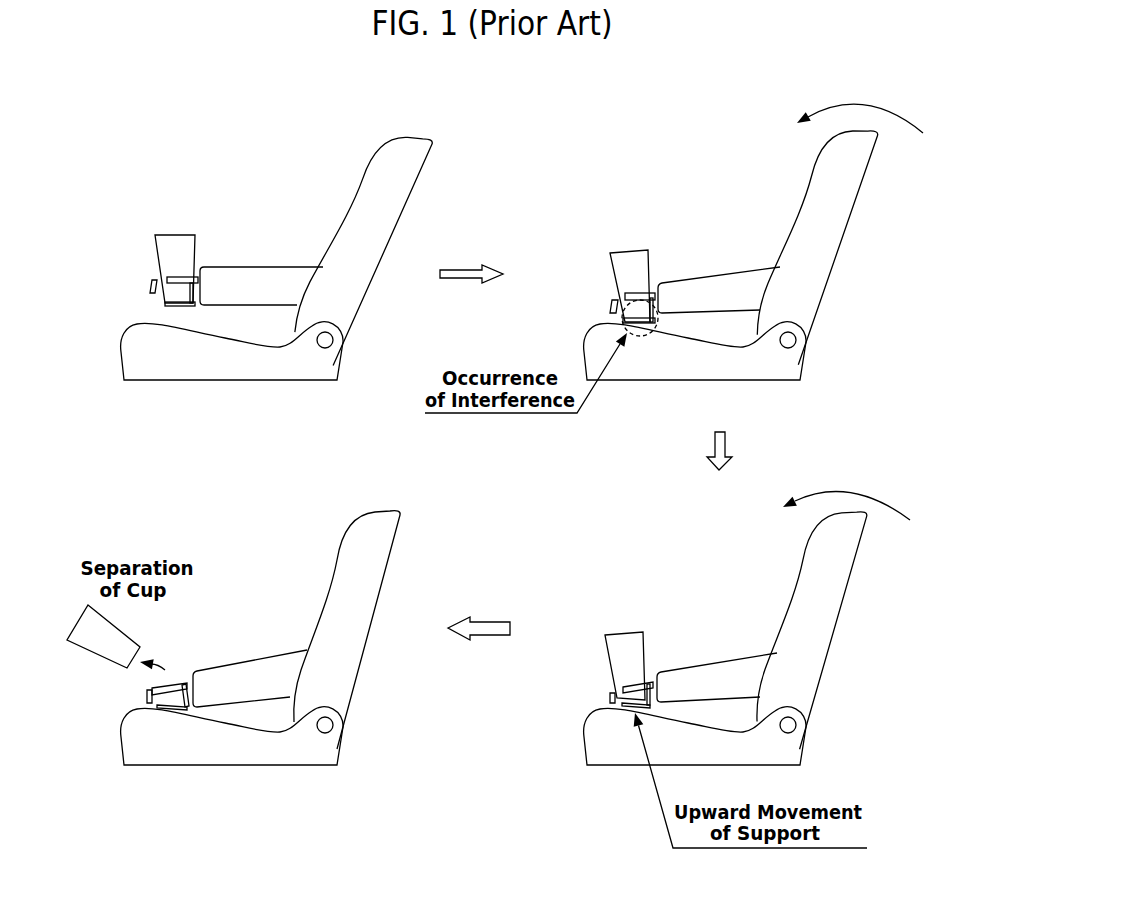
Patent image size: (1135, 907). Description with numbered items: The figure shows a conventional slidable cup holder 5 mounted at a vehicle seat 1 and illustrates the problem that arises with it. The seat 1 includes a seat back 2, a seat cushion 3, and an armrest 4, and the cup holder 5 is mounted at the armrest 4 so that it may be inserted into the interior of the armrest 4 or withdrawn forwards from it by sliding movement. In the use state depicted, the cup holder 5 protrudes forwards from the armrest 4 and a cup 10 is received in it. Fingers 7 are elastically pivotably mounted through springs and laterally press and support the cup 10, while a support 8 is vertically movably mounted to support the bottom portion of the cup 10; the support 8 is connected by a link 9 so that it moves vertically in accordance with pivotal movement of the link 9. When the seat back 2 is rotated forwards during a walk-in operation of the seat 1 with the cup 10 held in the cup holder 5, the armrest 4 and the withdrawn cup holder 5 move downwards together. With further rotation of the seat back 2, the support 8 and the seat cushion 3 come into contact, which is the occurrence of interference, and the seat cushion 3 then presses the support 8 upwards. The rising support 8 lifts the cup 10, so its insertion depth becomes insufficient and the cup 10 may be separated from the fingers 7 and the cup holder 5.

The seat 1 is at (543, 419).
The seat back 2 is at (362, 213).
The seat cushion 3 is at (247, 365).
The armrest 4 is at (280, 270).
The cup holder 5 is at (143, 280).
The fingers 7 is at (183, 277).
The support 8 is at (177, 307).
The link 9 is at (197, 292).
The cup 10 is at (178, 230).